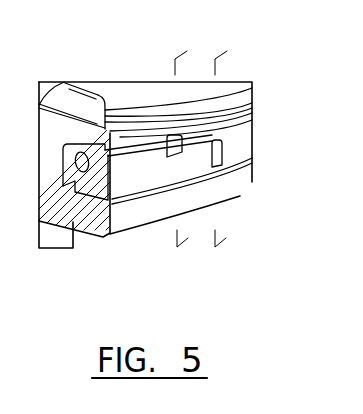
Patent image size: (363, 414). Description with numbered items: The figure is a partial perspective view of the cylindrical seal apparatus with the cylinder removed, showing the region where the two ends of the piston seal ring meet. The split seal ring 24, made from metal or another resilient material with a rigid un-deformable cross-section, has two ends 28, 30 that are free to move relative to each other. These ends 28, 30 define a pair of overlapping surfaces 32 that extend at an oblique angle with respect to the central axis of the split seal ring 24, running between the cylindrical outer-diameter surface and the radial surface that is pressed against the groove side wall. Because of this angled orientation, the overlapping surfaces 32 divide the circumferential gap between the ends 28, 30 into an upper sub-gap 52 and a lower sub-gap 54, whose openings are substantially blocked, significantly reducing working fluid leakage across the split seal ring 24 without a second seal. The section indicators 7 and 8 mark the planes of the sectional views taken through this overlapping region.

The split seal ring 24 is at (117, 190).
The end of the split seal ring 28 is at (192, 170).
The end of the split seal ring 30 is at (228, 97).
The overlapping surfaces 32 is at (240, 196).
The upper sub-gap 52 is at (177, 150).
The lower sub-gap 54 is at (219, 160).
The section line 7 is at (181, 146).
The section line 8 is at (220, 146).